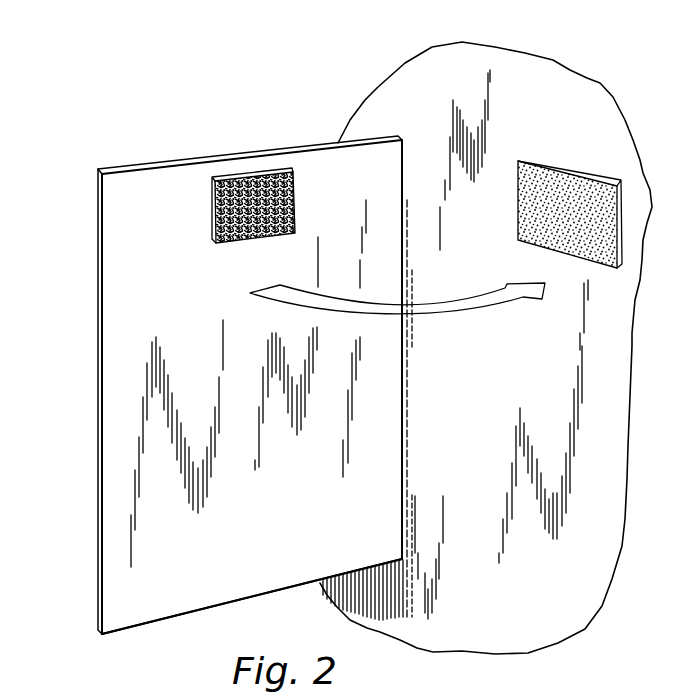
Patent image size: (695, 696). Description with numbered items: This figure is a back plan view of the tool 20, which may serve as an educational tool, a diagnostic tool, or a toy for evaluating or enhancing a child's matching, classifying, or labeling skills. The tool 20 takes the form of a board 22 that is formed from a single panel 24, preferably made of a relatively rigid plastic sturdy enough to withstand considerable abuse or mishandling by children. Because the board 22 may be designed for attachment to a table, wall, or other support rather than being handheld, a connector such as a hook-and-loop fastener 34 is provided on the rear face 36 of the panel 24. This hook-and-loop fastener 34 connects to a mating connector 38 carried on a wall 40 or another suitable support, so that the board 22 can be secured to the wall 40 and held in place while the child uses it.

The tool 20 is at (303, 106).
The board 22 is at (220, 148).
The panel 24 is at (97, 234).
The hook-and-loop fastener 34 is at (294, 182).
The rear face 36 is at (108, 572).
The mating connector 38 is at (590, 190).
The wall 40 is at (594, 107).